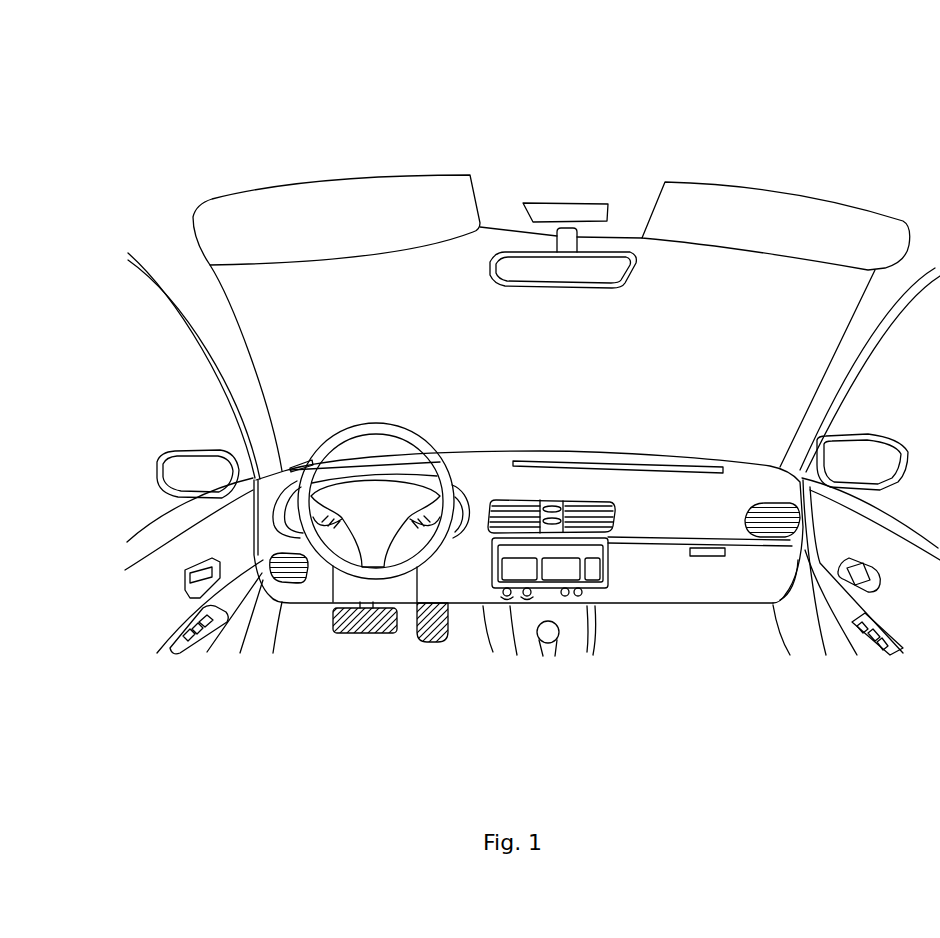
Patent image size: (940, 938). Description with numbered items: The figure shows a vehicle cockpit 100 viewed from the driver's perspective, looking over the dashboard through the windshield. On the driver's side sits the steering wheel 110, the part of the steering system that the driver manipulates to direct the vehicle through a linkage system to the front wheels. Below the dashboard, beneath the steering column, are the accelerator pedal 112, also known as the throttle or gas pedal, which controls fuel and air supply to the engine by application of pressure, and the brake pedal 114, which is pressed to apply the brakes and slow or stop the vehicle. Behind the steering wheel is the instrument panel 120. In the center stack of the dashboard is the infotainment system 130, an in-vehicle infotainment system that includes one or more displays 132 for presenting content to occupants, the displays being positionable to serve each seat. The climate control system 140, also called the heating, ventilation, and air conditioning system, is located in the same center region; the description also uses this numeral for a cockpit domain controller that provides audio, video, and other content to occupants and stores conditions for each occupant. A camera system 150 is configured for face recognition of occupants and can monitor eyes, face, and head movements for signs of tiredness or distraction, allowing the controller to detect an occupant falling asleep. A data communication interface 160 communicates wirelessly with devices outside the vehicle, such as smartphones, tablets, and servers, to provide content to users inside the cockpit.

The vehicle cockpit 100 is at (71, 51).
The steering wheel 110 is at (373, 423).
The accelerator pedal 112 is at (425, 643).
The brake pedal 114 is at (377, 634).
The instrument panel 120 is at (468, 488).
The infotainment system 130 is at (594, 588).
The display 132 is at (498, 573).
The climate control system 140 is at (553, 588).
The camera system 150 is at (518, 603).
The data communication interface 160 is at (602, 572).